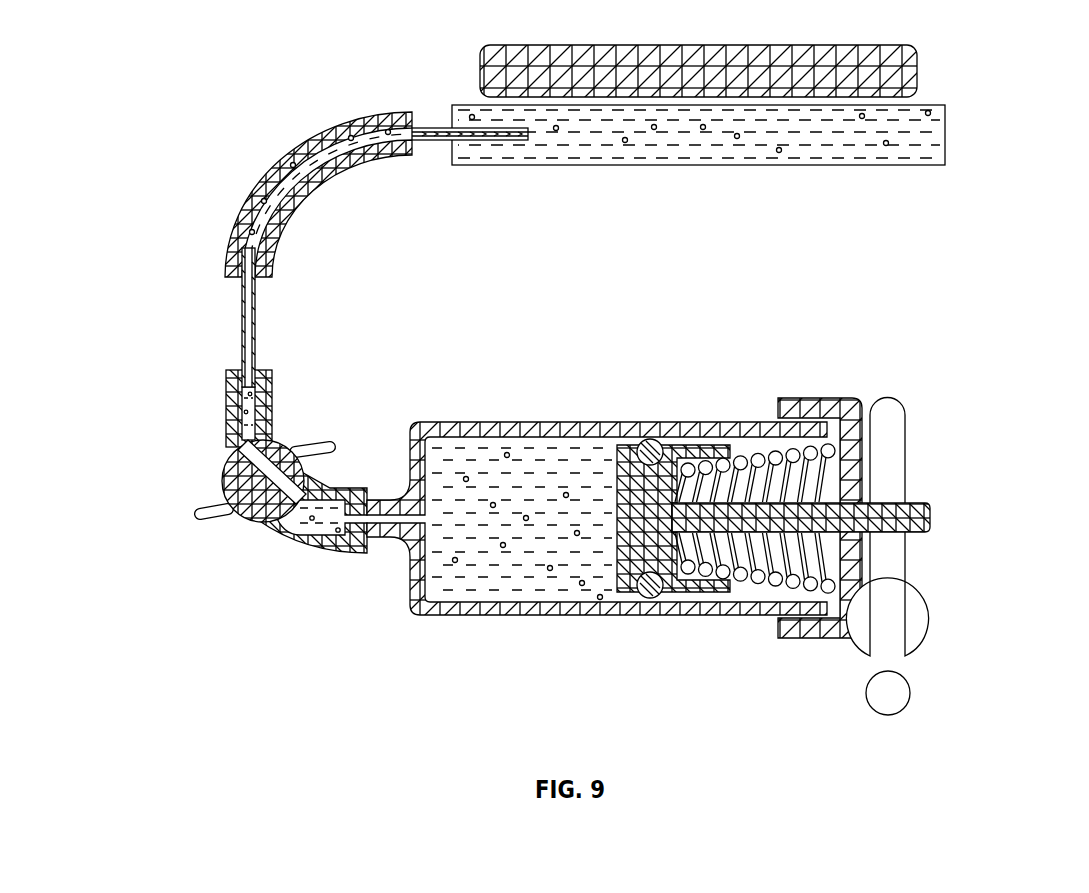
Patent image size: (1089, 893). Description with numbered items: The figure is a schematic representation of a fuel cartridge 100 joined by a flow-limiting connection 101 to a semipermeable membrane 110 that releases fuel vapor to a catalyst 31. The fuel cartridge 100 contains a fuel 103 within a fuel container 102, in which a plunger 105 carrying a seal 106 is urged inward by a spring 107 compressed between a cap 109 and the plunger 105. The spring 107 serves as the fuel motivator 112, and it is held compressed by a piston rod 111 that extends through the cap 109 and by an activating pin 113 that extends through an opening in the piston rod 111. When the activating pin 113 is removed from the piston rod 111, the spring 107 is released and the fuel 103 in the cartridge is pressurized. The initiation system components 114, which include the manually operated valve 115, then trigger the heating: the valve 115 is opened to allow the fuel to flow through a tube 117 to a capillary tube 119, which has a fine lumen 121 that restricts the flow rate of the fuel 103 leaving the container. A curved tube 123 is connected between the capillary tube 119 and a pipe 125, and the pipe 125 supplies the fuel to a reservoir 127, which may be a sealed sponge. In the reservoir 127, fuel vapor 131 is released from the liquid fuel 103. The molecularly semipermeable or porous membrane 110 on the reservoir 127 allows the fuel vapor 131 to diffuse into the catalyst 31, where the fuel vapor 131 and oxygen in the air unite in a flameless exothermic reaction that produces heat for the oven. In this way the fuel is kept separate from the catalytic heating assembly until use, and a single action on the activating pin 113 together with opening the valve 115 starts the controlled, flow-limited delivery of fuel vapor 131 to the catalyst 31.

The catalyst 31 is at (565, 44).
The fuel cartridge 100 is at (684, 546).
The flow-limiting connection 101 is at (259, 347).
The fuel container 102 is at (437, 621).
The fuel 103 is at (559, 468).
The plunger 105 is at (617, 552).
The seal 106 is at (669, 548).
The spring 107 is at (772, 594).
The cap 109 is at (806, 398).
The semipermeable membrane 110 is at (600, 106).
The piston rod 111 is at (935, 522).
The fuel motivator 112 is at (720, 582).
The activating pin 113 is at (909, 630).
The initiation system components 114 is at (212, 540).
The valve 115 is at (225, 474).
The tube 117 is at (270, 406).
The capillary tube 119 is at (252, 326).
The fine lumen 121 is at (247, 320).
The tube 123 is at (282, 147).
The pipe 125 is at (437, 150).
The reservoir 127 is at (850, 166).
The fuel vapor 131 is at (685, 128).